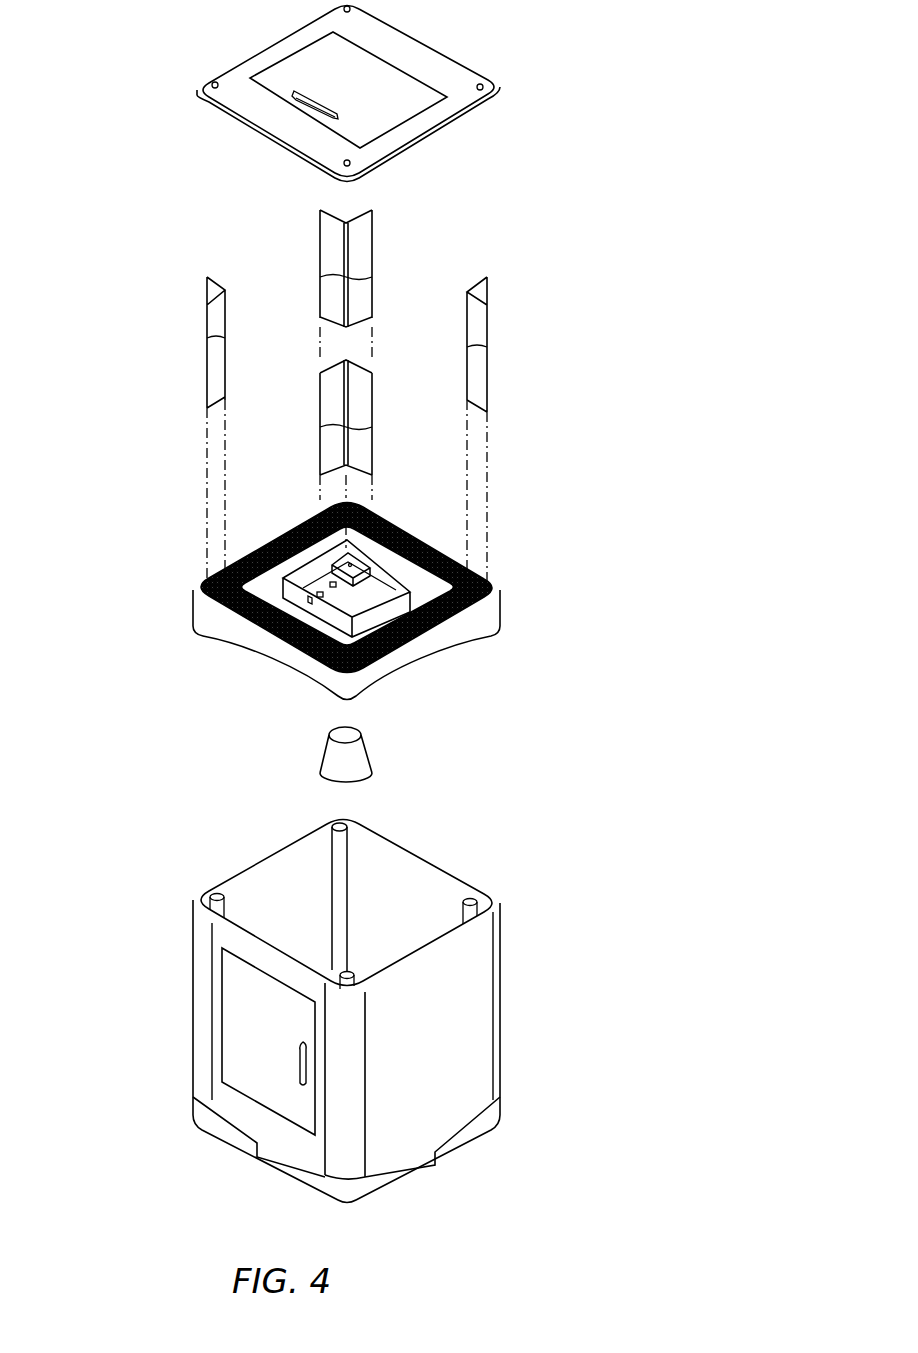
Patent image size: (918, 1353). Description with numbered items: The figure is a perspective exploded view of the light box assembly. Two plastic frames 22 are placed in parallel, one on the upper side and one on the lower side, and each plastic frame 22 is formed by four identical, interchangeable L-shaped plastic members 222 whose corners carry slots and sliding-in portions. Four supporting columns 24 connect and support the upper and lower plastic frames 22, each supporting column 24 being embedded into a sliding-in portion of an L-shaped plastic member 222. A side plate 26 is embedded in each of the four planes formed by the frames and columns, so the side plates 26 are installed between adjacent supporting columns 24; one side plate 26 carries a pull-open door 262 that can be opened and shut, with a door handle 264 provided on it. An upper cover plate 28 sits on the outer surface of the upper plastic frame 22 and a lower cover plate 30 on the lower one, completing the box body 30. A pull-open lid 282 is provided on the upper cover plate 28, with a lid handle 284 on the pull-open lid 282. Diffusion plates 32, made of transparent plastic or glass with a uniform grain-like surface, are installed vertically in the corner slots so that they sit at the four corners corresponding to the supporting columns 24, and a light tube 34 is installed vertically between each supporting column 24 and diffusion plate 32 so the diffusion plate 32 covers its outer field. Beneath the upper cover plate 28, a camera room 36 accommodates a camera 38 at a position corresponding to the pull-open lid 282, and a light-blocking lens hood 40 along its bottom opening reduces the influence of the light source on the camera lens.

The upper cover plate 28 is at (349, 91).
The pull-open lid 282 is at (307, 60).
The lid handle 284 is at (293, 97).
The diffusion plate 32 is at (220, 385).
The plastic frame 22 is at (358, 629).
The L-shaped plastic member 222 is at (475, 628).
The camera room 36 is at (419, 647).
The camera 38 is at (367, 577).
The light-blocking lens hood 40 is at (350, 762).
The lower cover plate 30 is at (365, 1001).
The light tube 34 is at (333, 873).
The supporting column 24 is at (202, 1010).
The side plate 26 is at (460, 1078).
The pull-open door 262 is at (240, 1063).
The door handle 264 is at (298, 1078).